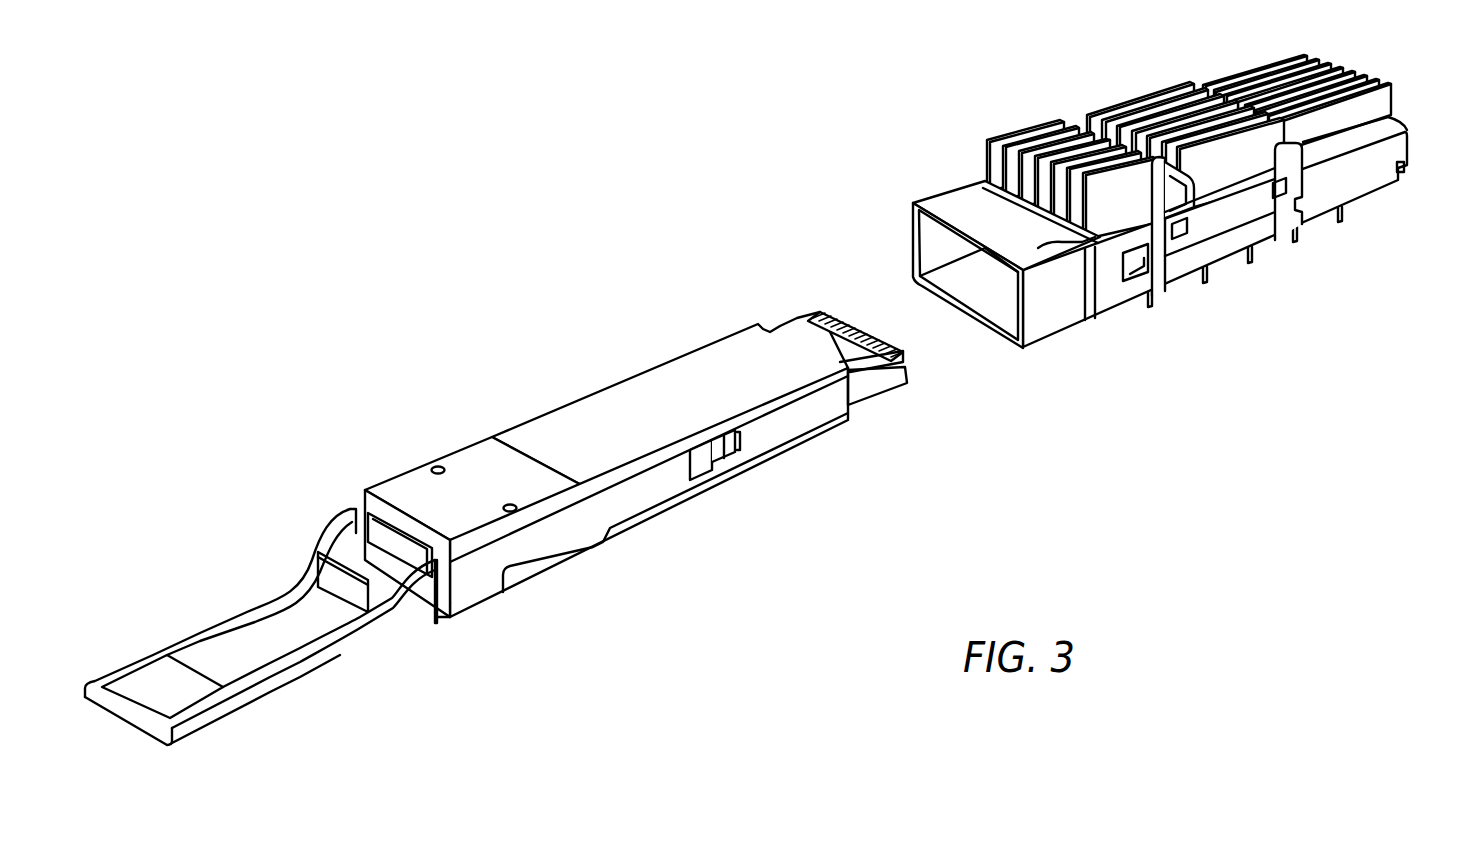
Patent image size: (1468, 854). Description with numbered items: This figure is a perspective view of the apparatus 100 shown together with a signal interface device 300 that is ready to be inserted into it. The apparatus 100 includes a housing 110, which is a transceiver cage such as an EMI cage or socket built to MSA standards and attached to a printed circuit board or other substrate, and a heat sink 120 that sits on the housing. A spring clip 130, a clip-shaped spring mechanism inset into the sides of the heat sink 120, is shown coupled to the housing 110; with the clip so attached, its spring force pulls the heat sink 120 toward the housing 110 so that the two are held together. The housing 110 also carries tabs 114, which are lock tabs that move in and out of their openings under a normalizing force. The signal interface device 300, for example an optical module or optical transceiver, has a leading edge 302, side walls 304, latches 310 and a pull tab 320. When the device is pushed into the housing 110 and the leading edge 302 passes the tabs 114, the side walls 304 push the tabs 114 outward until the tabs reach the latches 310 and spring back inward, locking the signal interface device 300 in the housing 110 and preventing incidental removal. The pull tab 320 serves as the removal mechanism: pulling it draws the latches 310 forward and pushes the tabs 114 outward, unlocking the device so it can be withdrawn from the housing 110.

The apparatus 100 is at (1040, 33).
The housing 110 is at (1355, 171).
The tabs 114 is at (1141, 270).
The heat sink 120 is at (1016, 127).
The spring clip 130 is at (1256, 222).
The signal interface device 300 is at (472, 312).
The leading edge 302 is at (851, 394).
The side walls 304 is at (786, 426).
The latches 310 is at (711, 466).
The pull tab 320 is at (232, 707).